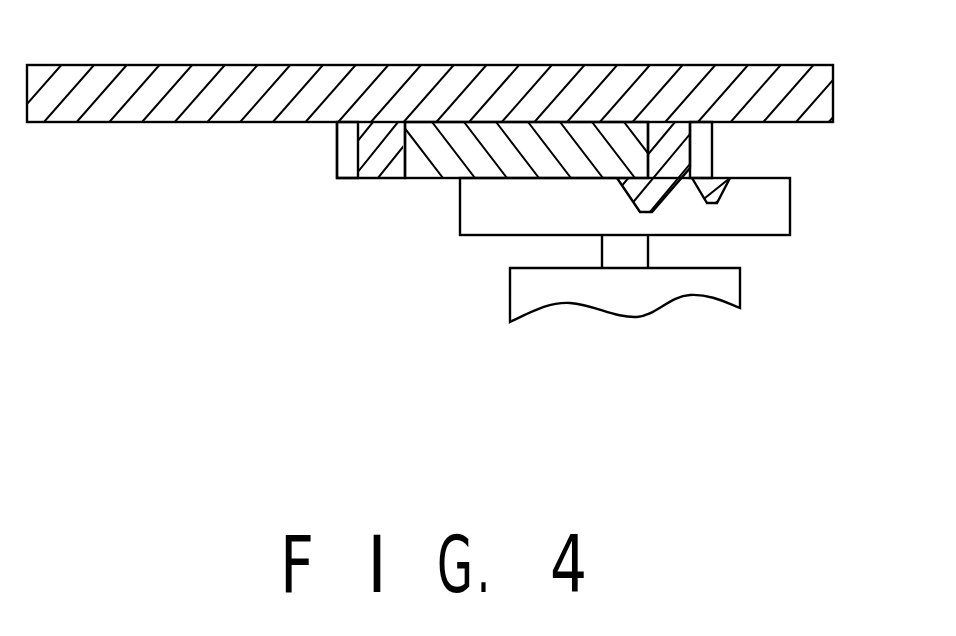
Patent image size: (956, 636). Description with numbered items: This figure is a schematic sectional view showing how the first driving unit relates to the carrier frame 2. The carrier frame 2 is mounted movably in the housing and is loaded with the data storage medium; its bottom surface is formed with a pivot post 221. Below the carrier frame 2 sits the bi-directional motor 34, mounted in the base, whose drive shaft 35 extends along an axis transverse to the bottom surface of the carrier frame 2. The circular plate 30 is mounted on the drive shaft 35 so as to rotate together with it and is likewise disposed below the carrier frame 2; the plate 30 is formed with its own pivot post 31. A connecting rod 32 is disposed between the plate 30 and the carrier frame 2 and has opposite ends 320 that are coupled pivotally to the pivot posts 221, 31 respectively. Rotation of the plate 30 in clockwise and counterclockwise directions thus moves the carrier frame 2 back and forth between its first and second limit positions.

The carrier frame 2 is at (820, 95).
The pivot post 221 is at (375, 165).
The opposite ends 320 is at (350, 158).
The connecting rod 32 is at (435, 152).
The pivot post 31 is at (713, 148).
The circular plate 30 is at (727, 210).
The drive shaft 35 is at (620, 253).
The bi-directional motor 34 is at (687, 287).